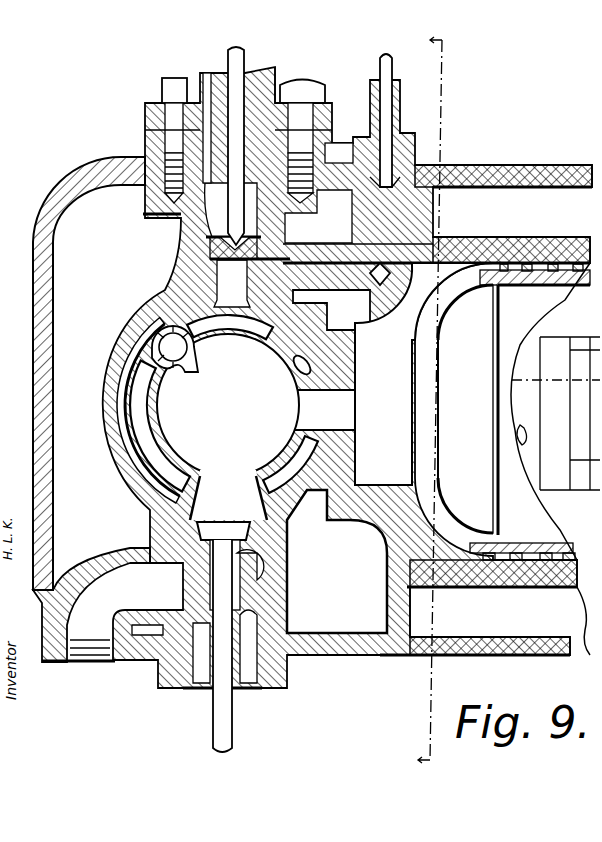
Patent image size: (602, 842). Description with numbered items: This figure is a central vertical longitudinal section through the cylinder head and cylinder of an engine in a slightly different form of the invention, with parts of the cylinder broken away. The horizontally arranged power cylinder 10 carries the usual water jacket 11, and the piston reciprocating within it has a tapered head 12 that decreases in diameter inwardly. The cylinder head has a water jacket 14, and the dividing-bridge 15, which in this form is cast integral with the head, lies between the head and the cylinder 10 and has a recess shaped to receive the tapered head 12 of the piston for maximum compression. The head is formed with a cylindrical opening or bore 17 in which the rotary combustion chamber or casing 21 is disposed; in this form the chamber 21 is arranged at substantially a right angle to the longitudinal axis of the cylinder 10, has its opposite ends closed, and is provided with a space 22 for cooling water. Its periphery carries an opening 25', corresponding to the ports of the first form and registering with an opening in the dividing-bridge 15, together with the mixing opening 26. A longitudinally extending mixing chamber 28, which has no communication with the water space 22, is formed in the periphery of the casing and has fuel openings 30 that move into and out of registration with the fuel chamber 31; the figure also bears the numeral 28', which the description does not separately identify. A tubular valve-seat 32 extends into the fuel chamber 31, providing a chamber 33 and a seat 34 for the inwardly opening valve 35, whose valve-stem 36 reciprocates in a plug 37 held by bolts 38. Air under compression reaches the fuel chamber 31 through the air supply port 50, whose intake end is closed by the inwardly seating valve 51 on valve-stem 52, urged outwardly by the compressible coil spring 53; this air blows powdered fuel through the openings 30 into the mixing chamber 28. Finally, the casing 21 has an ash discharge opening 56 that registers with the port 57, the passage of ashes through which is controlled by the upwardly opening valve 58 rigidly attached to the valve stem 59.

The power cylinder 10 is at (433, 403).
The water jacket 11 is at (520, 520).
The tapered head 12 is at (438, 357).
The water jacket 14 is at (68, 534).
The dividing-bridge 15 is at (365, 332).
The cylindrical opening or bore 17 is at (148, 443).
The rotary combustion chamber or casing 21 is at (224, 430).
The space 22 is at (158, 455).
The opening 25' is at (228, 405).
The mixing opening or port 26 is at (296, 365).
The mixing chamber 28 is at (141, 337).
The passage 28' is at (341, 410).
The fuel openings 30 is at (160, 322).
The fuel chamber 31 is at (228, 280).
The tubular valve-seat 32 is at (152, 200).
The chamber 33 is at (148, 165).
The seat 34 is at (152, 214).
The inwardly opening valve 35 is at (208, 240).
The valve-stem 36 is at (273, 73).
The plug 37 is at (227, 78).
The bolts 38 is at (165, 98).
The air supply port 50 is at (443, 217).
The inwardly seating valve 51 is at (420, 170).
The valve-stem 52 is at (393, 97).
The compressible coil spring 53 is at (184, 358).
The ash discharge or exhaust opening 56 is at (218, 492).
The opening or port 57 is at (198, 527).
The upwardly opening valve 58 is at (178, 562).
The valve stem 59 is at (224, 727).